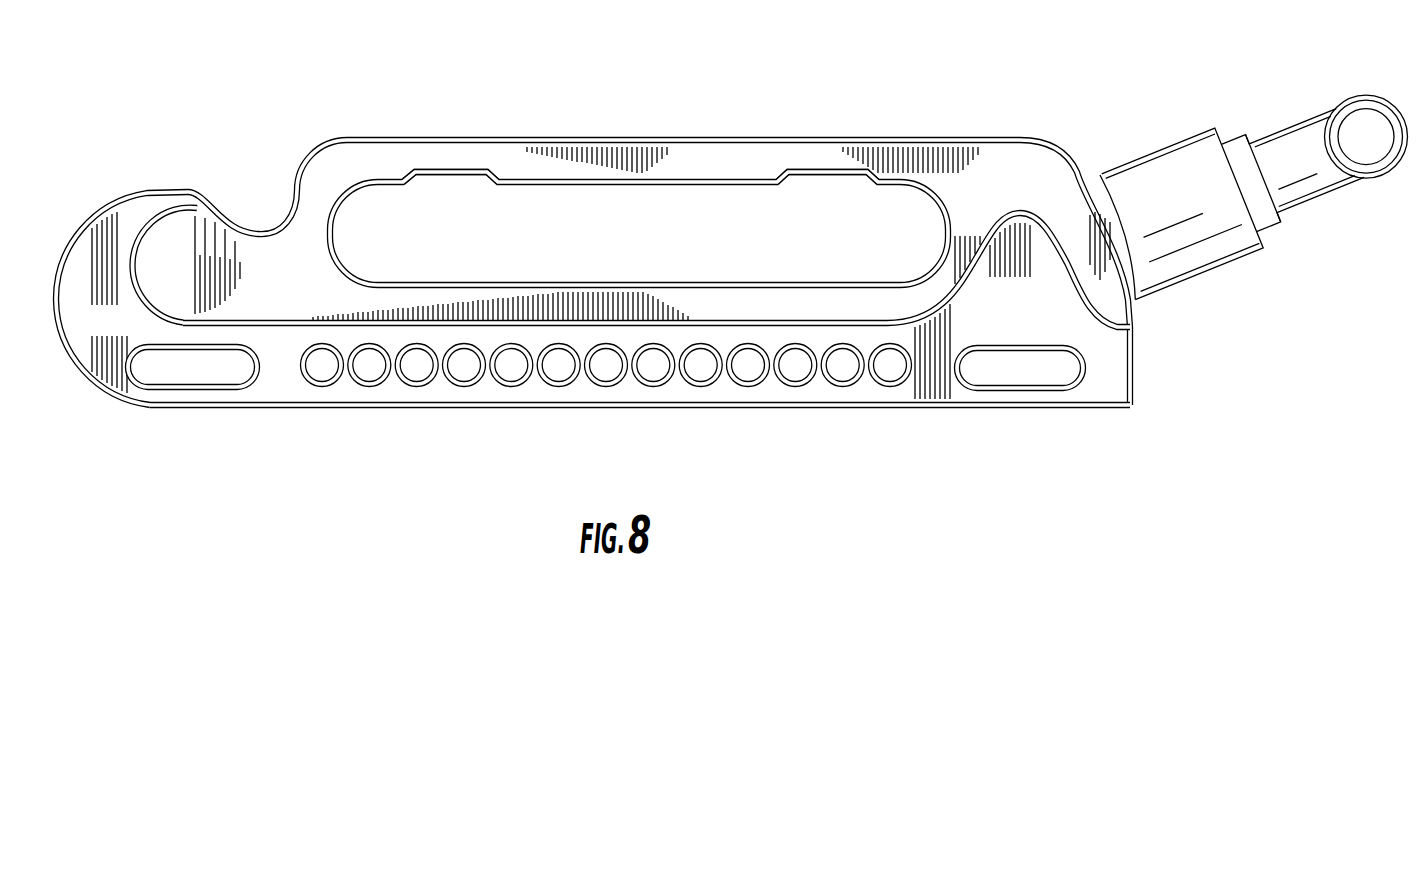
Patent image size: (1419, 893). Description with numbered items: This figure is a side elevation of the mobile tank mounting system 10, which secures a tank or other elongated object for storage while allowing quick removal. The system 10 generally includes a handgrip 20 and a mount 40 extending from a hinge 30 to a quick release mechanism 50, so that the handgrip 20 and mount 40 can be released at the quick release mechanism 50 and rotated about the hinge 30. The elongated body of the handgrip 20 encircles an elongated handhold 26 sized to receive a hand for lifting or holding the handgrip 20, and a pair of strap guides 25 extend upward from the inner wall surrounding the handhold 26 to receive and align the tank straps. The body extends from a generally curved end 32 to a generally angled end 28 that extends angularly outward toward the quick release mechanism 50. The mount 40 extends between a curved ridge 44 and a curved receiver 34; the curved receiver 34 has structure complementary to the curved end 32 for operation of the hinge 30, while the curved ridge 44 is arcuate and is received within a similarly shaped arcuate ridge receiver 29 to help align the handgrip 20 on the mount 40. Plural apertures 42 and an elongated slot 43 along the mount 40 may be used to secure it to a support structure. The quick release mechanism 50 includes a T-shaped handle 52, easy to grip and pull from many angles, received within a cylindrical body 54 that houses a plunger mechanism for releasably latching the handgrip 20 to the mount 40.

The mobile tank mounting system 10 is at (291, 88).
The handgrip 20 is at (484, 126).
The strap guides 25 is at (449, 172).
The elongated handhold 26 is at (716, 190).
The angled end 28 is at (1117, 243).
The arcuate ridge receiver 29 is at (1018, 210).
The hinge 30 is at (197, 191).
The curved end 32 is at (155, 268).
The curved receiver 34 is at (43, 328).
The mount 40 is at (281, 420).
The apertures 42 is at (510, 372).
The elongated slot 43 is at (212, 388).
The curved ridge 44 is at (1023, 263).
The quick release mechanism 50 is at (1143, 127).
The T-shaped handle 52 is at (1286, 128).
The cylindrical body 54 is at (1208, 269).